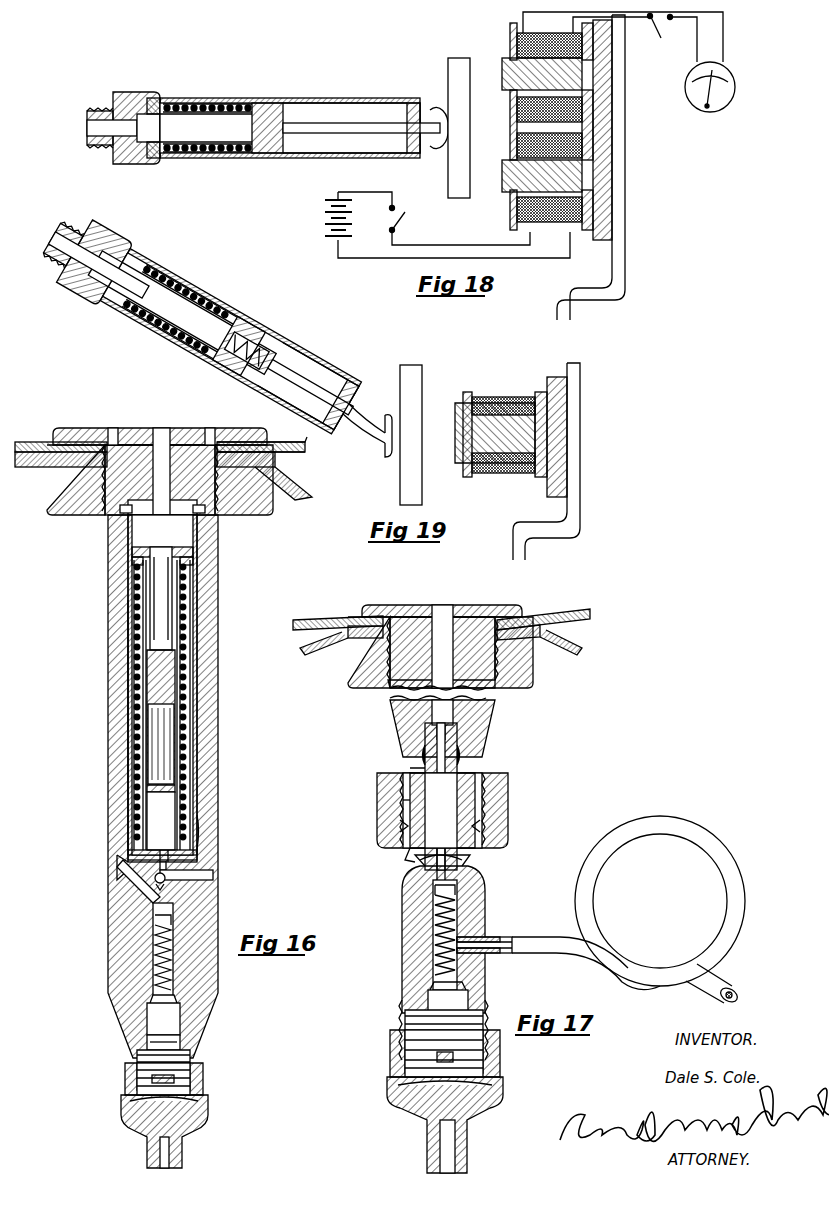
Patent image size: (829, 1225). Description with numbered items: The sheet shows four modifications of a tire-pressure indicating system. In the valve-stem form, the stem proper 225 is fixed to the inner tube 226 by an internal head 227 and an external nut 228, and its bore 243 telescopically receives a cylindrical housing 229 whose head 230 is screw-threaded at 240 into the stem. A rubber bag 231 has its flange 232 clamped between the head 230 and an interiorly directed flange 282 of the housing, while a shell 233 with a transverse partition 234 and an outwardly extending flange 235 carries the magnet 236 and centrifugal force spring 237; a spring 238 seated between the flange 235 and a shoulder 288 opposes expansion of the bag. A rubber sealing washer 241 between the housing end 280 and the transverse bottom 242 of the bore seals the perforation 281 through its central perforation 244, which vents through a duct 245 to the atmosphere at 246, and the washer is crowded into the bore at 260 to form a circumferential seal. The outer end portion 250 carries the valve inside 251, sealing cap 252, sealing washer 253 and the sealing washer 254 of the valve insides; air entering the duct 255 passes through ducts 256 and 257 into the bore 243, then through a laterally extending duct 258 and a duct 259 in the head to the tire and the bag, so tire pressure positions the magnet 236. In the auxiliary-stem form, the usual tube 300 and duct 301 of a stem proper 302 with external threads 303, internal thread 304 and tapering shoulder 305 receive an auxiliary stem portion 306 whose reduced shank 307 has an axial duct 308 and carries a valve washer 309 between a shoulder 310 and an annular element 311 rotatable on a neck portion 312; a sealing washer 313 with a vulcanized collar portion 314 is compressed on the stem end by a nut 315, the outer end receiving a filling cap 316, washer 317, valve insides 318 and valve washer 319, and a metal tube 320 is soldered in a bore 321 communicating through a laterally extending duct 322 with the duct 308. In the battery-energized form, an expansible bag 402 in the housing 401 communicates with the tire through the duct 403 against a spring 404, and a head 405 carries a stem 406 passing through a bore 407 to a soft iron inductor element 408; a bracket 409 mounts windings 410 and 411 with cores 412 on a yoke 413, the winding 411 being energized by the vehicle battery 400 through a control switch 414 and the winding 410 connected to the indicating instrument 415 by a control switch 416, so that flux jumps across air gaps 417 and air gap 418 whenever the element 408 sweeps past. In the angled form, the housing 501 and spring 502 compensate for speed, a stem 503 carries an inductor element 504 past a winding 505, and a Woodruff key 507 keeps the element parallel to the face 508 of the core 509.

In FIG. 18, the vehicle battery 400 is at (324, 215).
In FIG. 18, the housing 401 is at (290, 104).
In FIG. 18, the expansible bag 402 is at (207, 101).
In FIG. 18, the duct 403 is at (99, 128).
In FIG. 18, the spring 404 is at (265, 112).
In FIG. 18, the head 405 is at (345, 103).
In FIG. 18, the stem 406 is at (361, 97).
In FIG. 18, the bore 407 is at (423, 110).
In FIG. 18, the soft iron inductor element 408 is at (452, 62).
In FIG. 18, the bracket 409 is at (612, 245).
In FIG. 18, the winding 410 is at (562, 20).
In FIG. 18, the winding 411 is at (542, 212).
In FIG. 18, the core 412 is at (520, 70).
In FIG. 18, the yoke 413 is at (610, 140).
In FIG. 18, the control switch 414 is at (408, 207).
In FIG. 18, the indicating instrument 415 is at (735, 90).
In FIG. 18, the control switch 416 is at (660, 40).
In FIG. 18, the air gaps 417 is at (490, 152).
In FIG. 18, the air gap 418 is at (488, 117).
In FIG. 19, the housing 501 is at (300, 333).
In FIG. 19, the spring 502 is at (222, 310).
In FIG. 19, the stem 503 is at (310, 375).
In FIG. 19, the inductor element 504 is at (415, 383).
In FIG. 19, the winding 505 is at (495, 397).
In FIG. 19, the Woodruff key 507 is at (372, 425).
In FIG. 19, the face 508 is at (455, 435).
In FIG. 19, the core 509 is at (468, 470).
In FIG. 16, the stem proper 225 is at (205, 745).
In FIG. 16, the inner tube 226 is at (22, 442).
In FIG. 16, the head 227 is at (65, 428).
In FIG. 16, the nut 228 is at (60, 505).
In FIG. 16, the cylindrical housing 229 is at (197, 535).
In FIG. 16, the head 230 is at (166, 435).
In FIG. 16, the rubber bag 231 is at (170, 600).
In FIG. 16, the flange 232 is at (193, 552).
In FIG. 16, the shell 233 is at (150, 748).
In FIG. 16, the transverse partition 234 is at (134, 665).
In FIG. 16, the outwardly extending flange 235 is at (143, 580).
In FIG. 16, the magnet 236 is at (190, 690).
In FIG. 16, the centrifugal force spring 237 is at (180, 670).
In FIG. 16, the spring 238 is at (186, 610).
In FIG. 16, the screw thread 240 is at (205, 440).
In FIG. 16, the sealing washer 241 is at (197, 856).
In FIG. 16, the transverse bottom 242 is at (170, 868).
In FIG. 16, the bore 243 is at (128, 800).
In FIG. 16, the central perforation 244 is at (160, 840).
In FIG. 16, the duct 245 is at (165, 888).
In FIG. 16, the atmosphere opening 246 is at (180, 878).
In FIG. 16, the outer end portion 250 is at (205, 1000).
In FIG. 16, the valve inside 251 is at (150, 1022).
In FIG. 16, the sealing cap 252 is at (135, 1110).
In FIG. 16, the sealing washer 253 is at (125, 1095).
In FIG. 16, the sealing washer 254 is at (178, 1043).
In FIG. 16, the duct 255 is at (155, 930).
In FIG. 16, the duct 256 is at (120, 885).
In FIG. 16, the duct 257 is at (115, 862).
In FIG. 16, the laterally extending duct 258 is at (125, 512).
In FIG. 16, the duct 259 is at (118, 432).
In FIG. 16, the crowded washer portion 260 is at (205, 810).
In FIG. 16, the housing end 280 is at (152, 830).
In FIG. 16, the perforation 281 is at (168, 845).
In FIG. 16, the interiorly directed flange 282 is at (134, 563).
In FIG. 16, the shoulder 288 is at (133, 720).
In FIG. 17, the tube 300 is at (565, 613).
In FIG. 17, the duct 301 is at (440, 620).
In FIG. 17, the stem proper 302 is at (485, 735).
In FIG. 17, the external threads 303 is at (460, 770).
In FIG. 17, the internal thread 304 is at (500, 792).
In FIG. 17, the tapering shoulder 305 is at (422, 752).
In FIG. 17, the auxiliary stem portion 306 is at (405, 935).
In FIG. 17, the reduced shank 307 is at (432, 870).
In FIG. 17, the axial duct 308 is at (480, 865).
In FIG. 17, the valve washer 309 is at (410, 772).
In FIG. 17, the shoulder 310 is at (400, 803).
In FIG. 17, the annular element 311 is at (460, 755).
In FIG. 17, the neck portion 312 is at (443, 722).
In FIG. 17, the sealing washer 313 is at (402, 860).
In FIG. 17, the collar portion 314 is at (482, 828).
In FIG. 17, the nut 315 is at (398, 828).
In FIG. 17, the filling cap 316 is at (478, 1110).
In FIG. 17, the washer 317 is at (500, 1080).
In FIG. 17, the valve insides 318 is at (400, 1008).
In FIG. 17, the valve washer 319 is at (468, 1005).
In FIG. 17, the metal tube 320 is at (540, 937).
In FIG. 17, the bore 321 is at (470, 937).
In FIG. 17, the laterally extending duct 322 is at (470, 953).